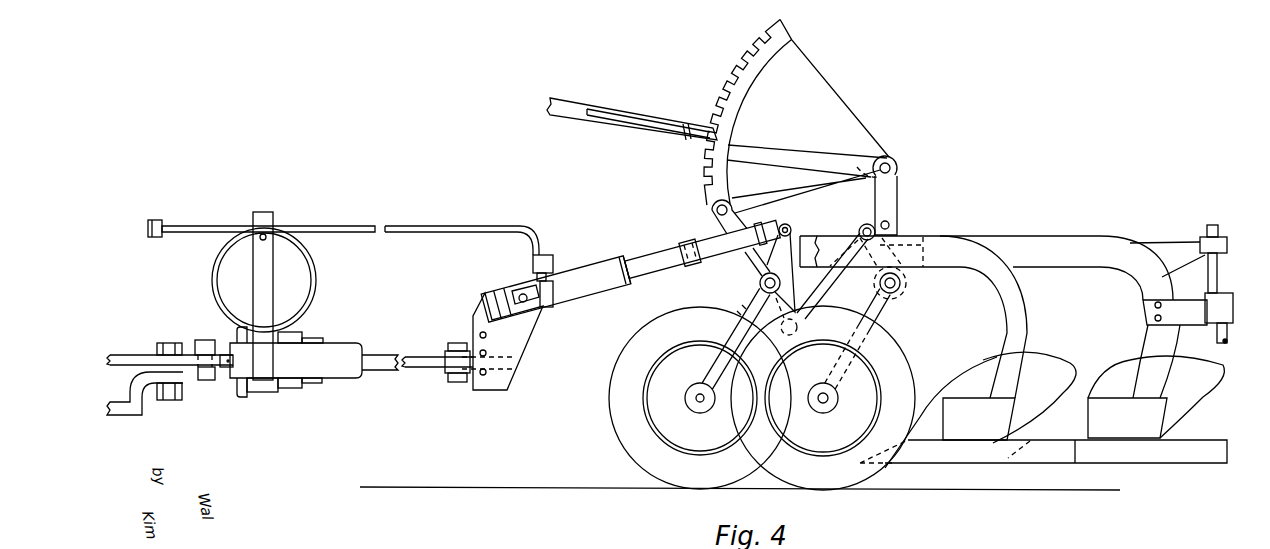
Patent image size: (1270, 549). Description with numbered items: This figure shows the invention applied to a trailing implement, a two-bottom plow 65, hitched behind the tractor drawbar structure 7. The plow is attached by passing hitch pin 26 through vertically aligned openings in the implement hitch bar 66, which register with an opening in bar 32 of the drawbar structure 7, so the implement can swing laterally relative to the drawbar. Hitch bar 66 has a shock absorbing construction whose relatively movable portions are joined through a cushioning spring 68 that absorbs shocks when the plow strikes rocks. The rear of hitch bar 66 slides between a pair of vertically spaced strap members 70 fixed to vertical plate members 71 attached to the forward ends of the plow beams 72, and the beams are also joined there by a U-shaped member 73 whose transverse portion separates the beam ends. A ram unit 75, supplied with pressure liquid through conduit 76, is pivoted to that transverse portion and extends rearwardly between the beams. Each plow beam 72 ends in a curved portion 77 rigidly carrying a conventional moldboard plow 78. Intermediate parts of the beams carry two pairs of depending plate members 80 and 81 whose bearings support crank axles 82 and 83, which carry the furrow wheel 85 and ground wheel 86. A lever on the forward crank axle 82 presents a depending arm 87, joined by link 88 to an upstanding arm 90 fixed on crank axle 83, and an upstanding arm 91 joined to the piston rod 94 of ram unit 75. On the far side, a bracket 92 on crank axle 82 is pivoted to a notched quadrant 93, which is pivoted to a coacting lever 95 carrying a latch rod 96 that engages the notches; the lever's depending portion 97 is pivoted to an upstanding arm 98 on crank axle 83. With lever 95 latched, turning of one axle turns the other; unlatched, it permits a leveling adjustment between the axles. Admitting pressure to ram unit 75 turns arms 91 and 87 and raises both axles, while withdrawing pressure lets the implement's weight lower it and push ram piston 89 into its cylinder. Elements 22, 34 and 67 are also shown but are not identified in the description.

The drawbar structure 7 is at (169, 371).
The hitch bracket 22 is at (133, 396).
The hitch pin 26 is at (205, 340).
The bar 32 is at (126, 356).
The nut 34 is at (168, 343).
The two-bottom plow 65 is at (1101, 381).
The implement hitch bar 66 is at (381, 367).
The cylinder end 67 is at (627, 285).
The cushioning spring 68 is at (290, 337).
The strap members 70 is at (446, 371).
The vertical plate members 71 is at (528, 349).
The plow beams 72 is at (1070, 237).
The U-shaped member 73 is at (498, 290).
The ram unit 75 is at (592, 272).
The conduit 76 is at (351, 226).
The curved portion 77 is at (1032, 325).
The moldboard plow 78 is at (983, 373).
The plate members 80 is at (793, 274).
The plate members 81 is at (921, 272).
The crank axle 82 is at (758, 285).
The crank axle 83 is at (902, 292).
The furrow wheel 85 is at (624, 358).
The ground wheel 86 is at (903, 361).
The depending arm 87 is at (779, 327).
The link 88 is at (831, 282).
The ram piston 89 is at (682, 248).
The upstanding arm 90 is at (890, 251).
The upstanding arm 91 is at (790, 235).
The bracket 92 is at (745, 263).
The notched quadrant 93 is at (752, 88).
The piston rod 94 is at (707, 250).
The coacting lever 95 is at (790, 146).
The latch rod 96 is at (628, 121).
The depending portion 97 is at (895, 193).
The upstanding arm 98 is at (897, 226).